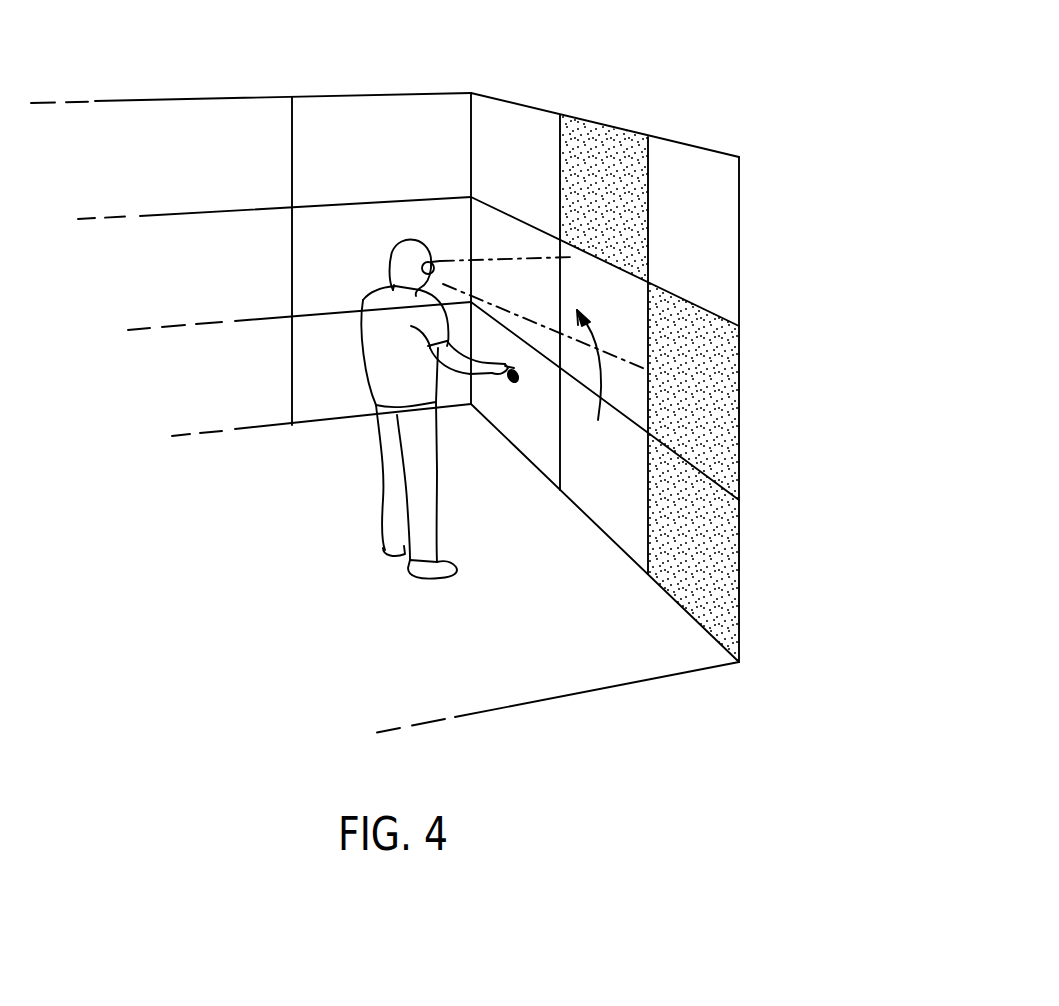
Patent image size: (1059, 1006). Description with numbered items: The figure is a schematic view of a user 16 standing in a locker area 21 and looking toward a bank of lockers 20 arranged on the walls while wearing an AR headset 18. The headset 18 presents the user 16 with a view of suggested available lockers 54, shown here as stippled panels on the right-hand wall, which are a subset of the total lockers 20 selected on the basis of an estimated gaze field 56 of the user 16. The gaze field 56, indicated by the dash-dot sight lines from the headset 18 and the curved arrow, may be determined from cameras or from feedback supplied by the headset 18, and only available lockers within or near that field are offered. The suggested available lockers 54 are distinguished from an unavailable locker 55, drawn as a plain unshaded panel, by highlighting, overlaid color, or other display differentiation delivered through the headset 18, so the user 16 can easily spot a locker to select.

The locker area 21 is at (194, 53).
The lockers 20 is at (372, 125).
The AR headset 18 is at (441, 260).
The user 16 is at (437, 518).
The suggested available lockers 54 is at (590, 135).
The unavailable lockers 55 is at (717, 242).
The estimated gaze field 56 is at (595, 380).